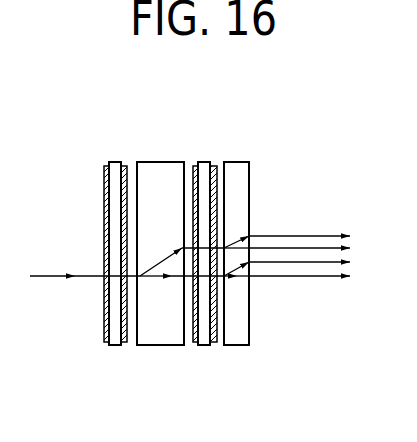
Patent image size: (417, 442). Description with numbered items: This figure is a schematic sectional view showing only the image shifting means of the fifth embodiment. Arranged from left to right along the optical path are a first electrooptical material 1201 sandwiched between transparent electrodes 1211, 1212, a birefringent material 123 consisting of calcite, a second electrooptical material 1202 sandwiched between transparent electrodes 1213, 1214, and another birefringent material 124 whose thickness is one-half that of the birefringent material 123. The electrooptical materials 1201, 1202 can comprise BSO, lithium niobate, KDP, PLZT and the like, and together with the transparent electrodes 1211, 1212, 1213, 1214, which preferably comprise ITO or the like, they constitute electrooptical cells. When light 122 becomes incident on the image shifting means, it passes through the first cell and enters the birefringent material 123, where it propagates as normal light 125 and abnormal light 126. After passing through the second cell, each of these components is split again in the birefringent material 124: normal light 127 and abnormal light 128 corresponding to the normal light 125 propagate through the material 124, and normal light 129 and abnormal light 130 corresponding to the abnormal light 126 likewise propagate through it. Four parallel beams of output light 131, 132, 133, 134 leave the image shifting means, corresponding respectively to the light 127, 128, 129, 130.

The light 122 is at (66, 273).
The electrooptical material 1201 is at (90, 251).
The transparent electrode 1211 is at (105, 346).
The transparent electrode 1212 is at (125, 346).
The birefringent material 123 is at (159, 163).
The normal light 125 is at (152, 283).
The abnormal light 126 is at (153, 275).
The electrooptical material 1202 is at (218, 252).
The transparent electrode 1213 is at (195, 346).
The transparent electrode 1214 is at (214, 346).
The birefringent material 124 is at (238, 165).
The normal light 127 is at (227, 275).
The abnormal light 128 is at (227, 270).
The normal light 129 is at (251, 237).
The abnormal light 130 is at (226, 246).
The output light 131 is at (336, 276).
The output light 132 is at (313, 262).
The output light 133 is at (306, 248).
The output light 134 is at (331, 236).